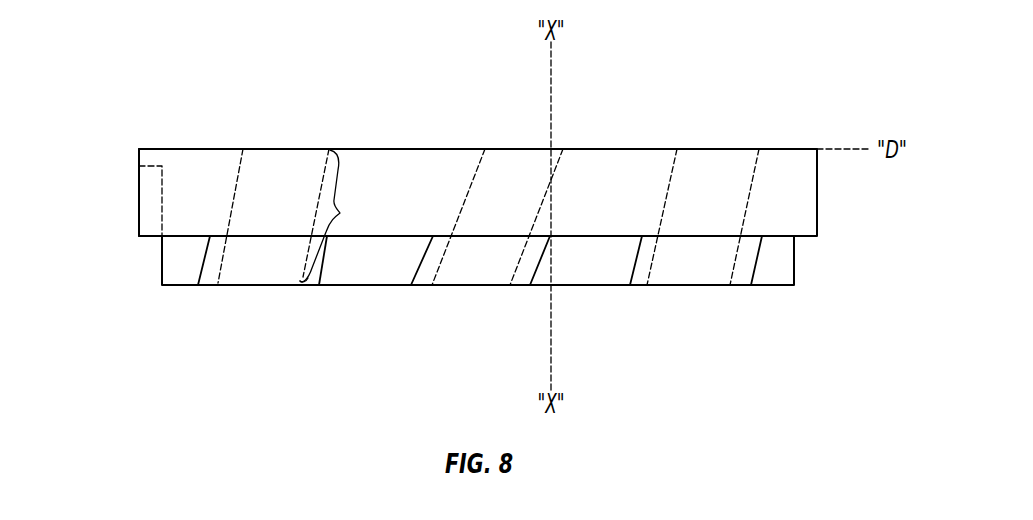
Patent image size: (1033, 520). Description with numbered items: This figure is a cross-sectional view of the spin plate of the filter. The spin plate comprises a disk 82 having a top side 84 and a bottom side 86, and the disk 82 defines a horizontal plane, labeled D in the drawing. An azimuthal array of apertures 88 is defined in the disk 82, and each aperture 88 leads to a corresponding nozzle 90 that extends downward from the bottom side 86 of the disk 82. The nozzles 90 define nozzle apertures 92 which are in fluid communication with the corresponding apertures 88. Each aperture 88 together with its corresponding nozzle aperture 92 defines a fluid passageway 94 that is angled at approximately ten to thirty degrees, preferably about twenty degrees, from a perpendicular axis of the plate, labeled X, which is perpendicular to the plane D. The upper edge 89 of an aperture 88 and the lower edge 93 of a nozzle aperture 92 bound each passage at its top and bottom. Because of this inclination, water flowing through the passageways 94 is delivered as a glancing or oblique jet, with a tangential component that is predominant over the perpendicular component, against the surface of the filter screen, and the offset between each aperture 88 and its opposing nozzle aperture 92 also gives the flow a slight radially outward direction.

The disk 82 is at (139, 197).
The top side 84 is at (382, 149).
The bottom side 86 is at (382, 236).
The aperture 88 is at (245, 160).
The upper edge 89 is at (330, 149).
The nozzle 90 is at (205, 258).
The nozzle aperture 92 is at (218, 285).
The lower edge 93 is at (300, 283).
The fluid passageway 94 is at (332, 216).